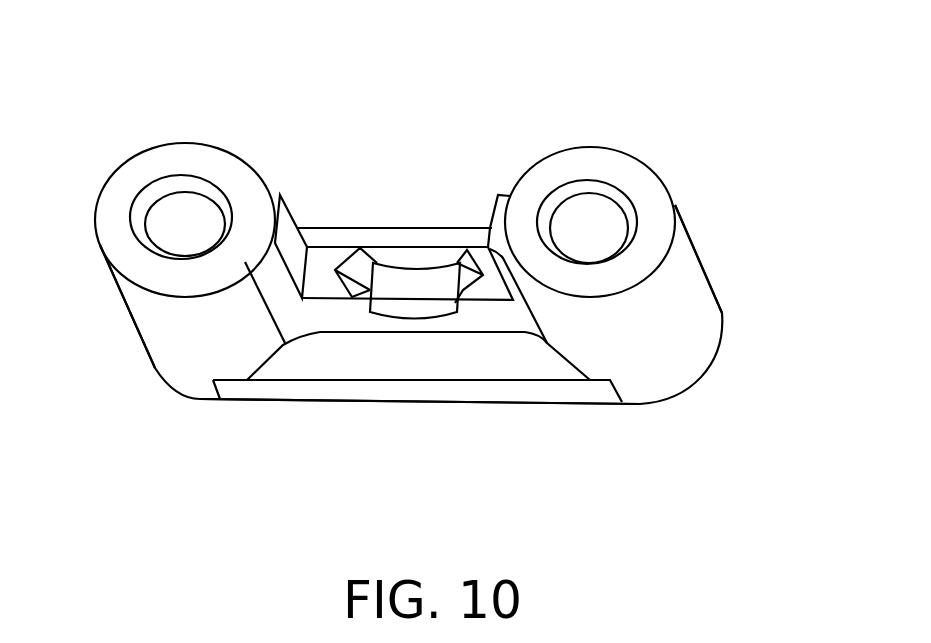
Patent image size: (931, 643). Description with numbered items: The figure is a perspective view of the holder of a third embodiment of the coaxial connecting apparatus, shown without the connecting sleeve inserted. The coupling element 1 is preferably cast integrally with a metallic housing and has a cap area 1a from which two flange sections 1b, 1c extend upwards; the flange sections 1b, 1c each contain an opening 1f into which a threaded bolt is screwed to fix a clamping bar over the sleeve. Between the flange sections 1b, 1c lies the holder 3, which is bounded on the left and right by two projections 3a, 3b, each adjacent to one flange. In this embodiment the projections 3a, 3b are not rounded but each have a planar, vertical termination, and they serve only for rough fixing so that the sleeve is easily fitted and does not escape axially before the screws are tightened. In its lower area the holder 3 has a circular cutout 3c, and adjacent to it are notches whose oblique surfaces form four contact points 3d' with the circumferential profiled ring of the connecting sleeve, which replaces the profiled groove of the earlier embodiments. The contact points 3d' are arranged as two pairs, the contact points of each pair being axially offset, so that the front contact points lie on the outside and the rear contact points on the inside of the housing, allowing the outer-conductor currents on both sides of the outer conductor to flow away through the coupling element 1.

The coupling element 1 is at (160, 405).
The cap area 1a is at (520, 395).
The flange section 1b is at (165, 323).
The flange section 1c is at (690, 287).
The openings 1f is at (192, 213).
The holder 3 is at (437, 142).
The projection 3a is at (267, 200).
The projection 3b is at (507, 200).
The circular cutout 3c is at (420, 303).
The contact points 3d' is at (421, 238).